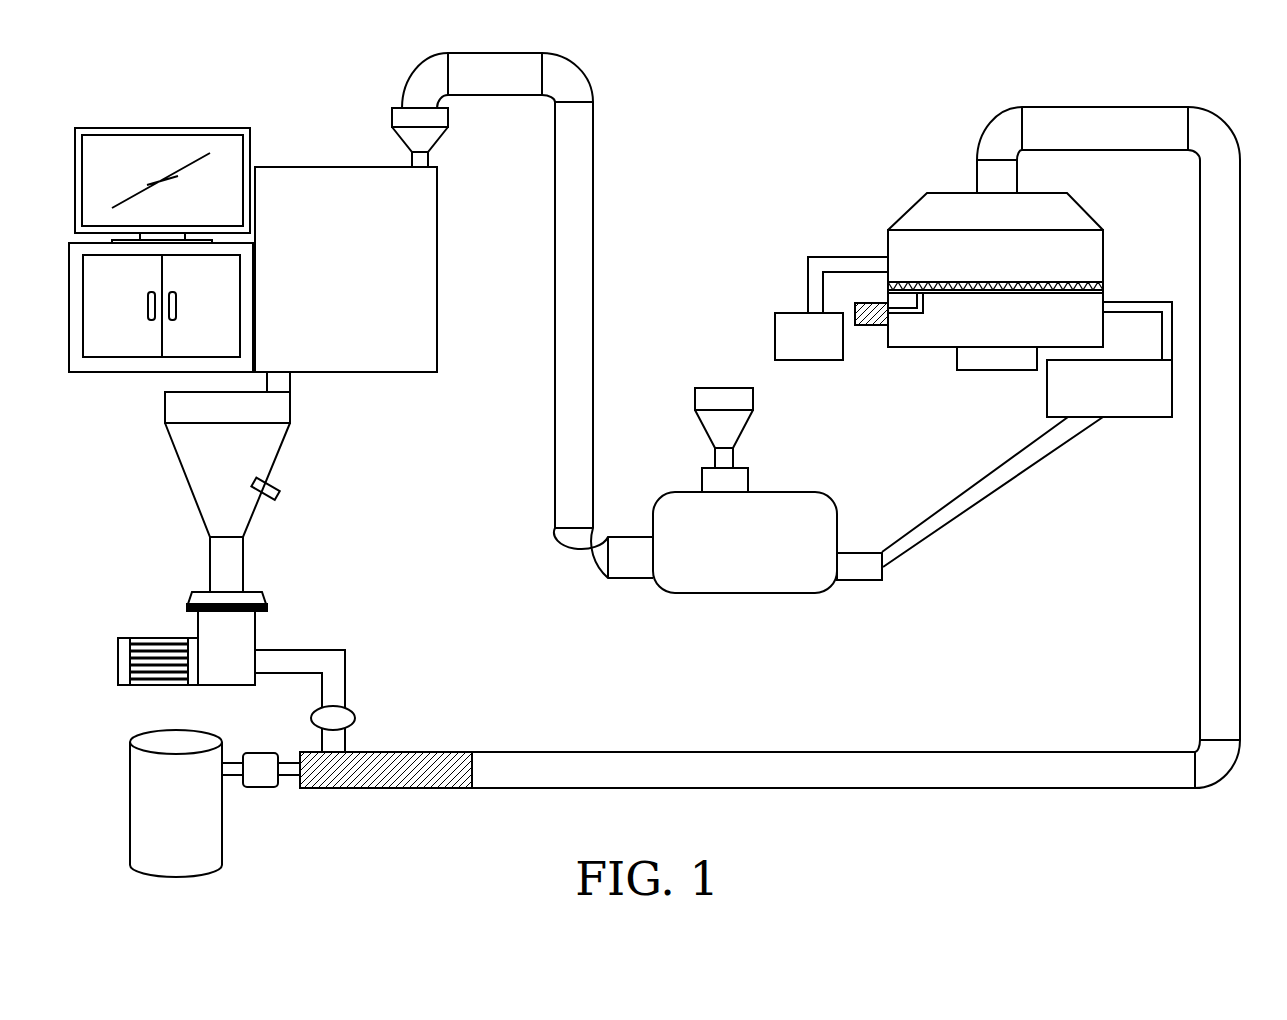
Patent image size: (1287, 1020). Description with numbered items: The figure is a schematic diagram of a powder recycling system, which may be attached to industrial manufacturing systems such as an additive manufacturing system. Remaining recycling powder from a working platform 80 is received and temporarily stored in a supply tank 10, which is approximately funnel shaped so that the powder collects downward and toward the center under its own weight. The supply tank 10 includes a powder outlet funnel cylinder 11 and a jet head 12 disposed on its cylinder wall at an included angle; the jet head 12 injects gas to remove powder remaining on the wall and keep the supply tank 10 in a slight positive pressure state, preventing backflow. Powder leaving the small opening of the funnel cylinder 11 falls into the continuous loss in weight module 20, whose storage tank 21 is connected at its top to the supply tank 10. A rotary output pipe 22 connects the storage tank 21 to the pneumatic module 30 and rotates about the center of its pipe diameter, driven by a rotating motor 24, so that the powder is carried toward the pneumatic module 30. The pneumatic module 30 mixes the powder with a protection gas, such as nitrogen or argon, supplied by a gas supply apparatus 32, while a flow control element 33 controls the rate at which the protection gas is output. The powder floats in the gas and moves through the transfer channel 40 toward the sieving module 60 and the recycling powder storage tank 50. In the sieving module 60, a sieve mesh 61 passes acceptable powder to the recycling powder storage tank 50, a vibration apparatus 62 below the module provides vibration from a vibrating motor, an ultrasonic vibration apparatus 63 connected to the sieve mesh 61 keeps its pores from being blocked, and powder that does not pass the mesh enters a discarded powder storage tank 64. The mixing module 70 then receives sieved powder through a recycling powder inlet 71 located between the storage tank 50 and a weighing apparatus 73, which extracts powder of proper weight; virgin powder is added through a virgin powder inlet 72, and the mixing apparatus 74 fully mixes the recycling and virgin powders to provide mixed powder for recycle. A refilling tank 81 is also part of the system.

The supply tank 10 is at (217, 482).
The powder outlet funnel cylinder 11 is at (165, 410).
The jet head 12 is at (276, 490).
The continuous loss in weight module 20 is at (236, 662).
The storage tank 21 is at (210, 627).
The rotary output pipe 22 is at (337, 650).
The rotating motor 24 is at (117, 652).
The pneumatic module 30 is at (398, 803).
The gas supply apparatus 32 is at (130, 813).
The flow control element 33 is at (260, 788).
The transfer channel 40 is at (1068, 810).
The recycling powder storage tank 50 is at (1142, 443).
The sieving module 60 is at (939, 276).
The sieve mesh 61 is at (960, 292).
The vibration apparatus 62 is at (997, 370).
The ultrasonic vibration apparatus 63 is at (868, 317).
The discarded powder storage tank 64 is at (810, 360).
The mixing module 70 is at (866, 503).
The recycling powder inlet 71 is at (883, 568).
The virgin powder inlet 72 is at (723, 388).
The weighing apparatus 73 is at (748, 480).
The mixing apparatus 74 is at (742, 575).
The working platform 80 is at (158, 110).
The refilling tank 81 is at (388, 117).